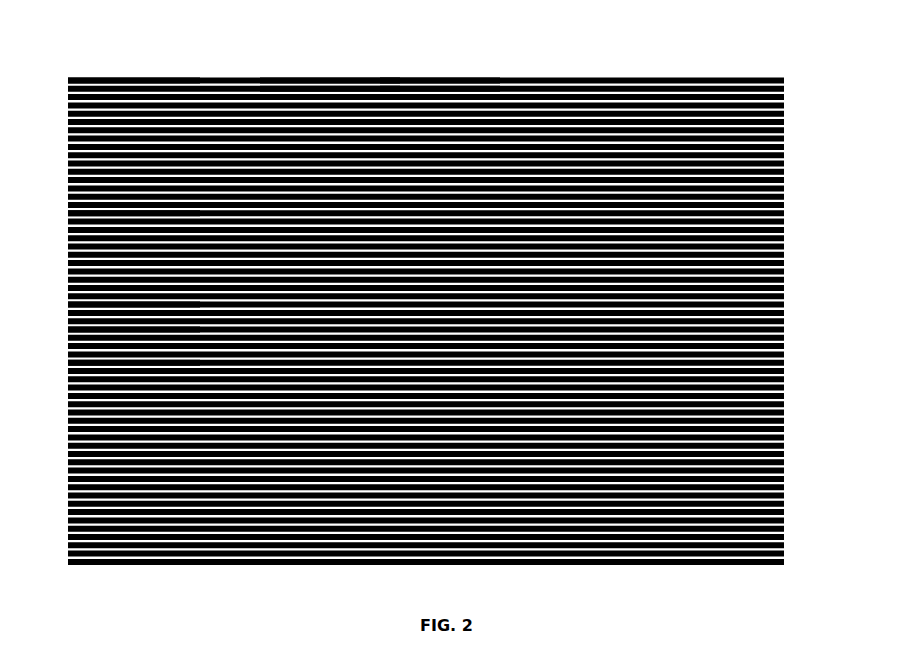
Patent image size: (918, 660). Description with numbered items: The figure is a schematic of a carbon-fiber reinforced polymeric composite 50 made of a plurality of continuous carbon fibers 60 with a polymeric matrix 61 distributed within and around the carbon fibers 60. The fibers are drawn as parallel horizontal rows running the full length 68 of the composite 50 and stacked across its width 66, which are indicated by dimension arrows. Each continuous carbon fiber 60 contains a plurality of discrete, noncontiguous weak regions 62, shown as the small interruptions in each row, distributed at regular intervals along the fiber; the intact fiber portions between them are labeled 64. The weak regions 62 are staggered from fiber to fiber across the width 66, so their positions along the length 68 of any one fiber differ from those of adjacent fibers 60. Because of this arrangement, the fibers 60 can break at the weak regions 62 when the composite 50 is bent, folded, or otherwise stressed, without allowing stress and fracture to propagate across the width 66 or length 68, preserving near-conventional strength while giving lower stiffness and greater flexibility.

The carbon-fiber reinforced polymeric composite 50 is at (109, 62).
The continuous carbon fibers 60 is at (68, 97).
The polymeric matrix 61 is at (130, 214).
The weak regions 62 is at (117, 327).
The segments 64 is at (397, 78).
The width 66 is at (805, 78).
The length 68 is at (68, 589).